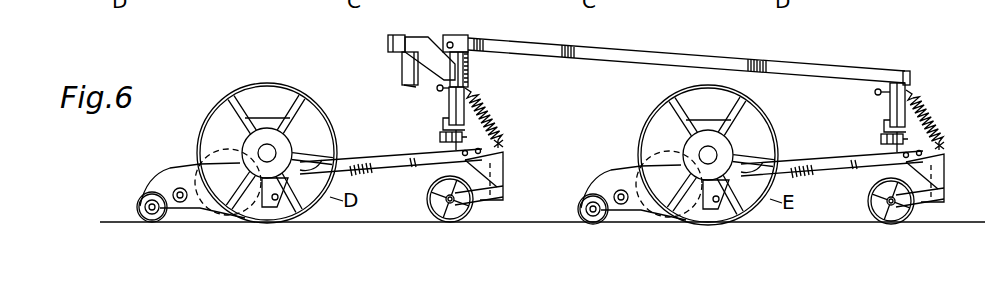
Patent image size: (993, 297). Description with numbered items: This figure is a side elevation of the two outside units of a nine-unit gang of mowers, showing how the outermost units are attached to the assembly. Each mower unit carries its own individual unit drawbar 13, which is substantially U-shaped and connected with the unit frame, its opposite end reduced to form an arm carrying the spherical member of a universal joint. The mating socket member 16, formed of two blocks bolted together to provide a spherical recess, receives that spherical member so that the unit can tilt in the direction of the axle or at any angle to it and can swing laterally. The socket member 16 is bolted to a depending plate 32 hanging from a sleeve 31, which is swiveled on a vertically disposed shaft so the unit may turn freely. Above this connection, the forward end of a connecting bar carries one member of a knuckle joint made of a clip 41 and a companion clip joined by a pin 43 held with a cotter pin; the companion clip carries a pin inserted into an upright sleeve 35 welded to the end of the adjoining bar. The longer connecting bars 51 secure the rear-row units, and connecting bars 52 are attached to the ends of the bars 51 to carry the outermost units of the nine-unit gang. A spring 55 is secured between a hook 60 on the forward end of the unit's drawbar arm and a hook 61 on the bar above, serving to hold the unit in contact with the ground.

The unit drawbar 13 is at (373, 172).
The socket member 16 is at (440, 138).
The sleeve 31 is at (455, 105).
The depending plate 32 is at (442, 128).
The upright sleeve 35 is at (402, 71).
The clip 41 is at (407, 35).
The pin 43 is at (451, 41).
The connecting bar 51 is at (436, 68).
The connecting bar 52 is at (685, 58).
The spring 55 is at (495, 116).
The hook 60 is at (501, 144).
The hook 61 is at (472, 94).